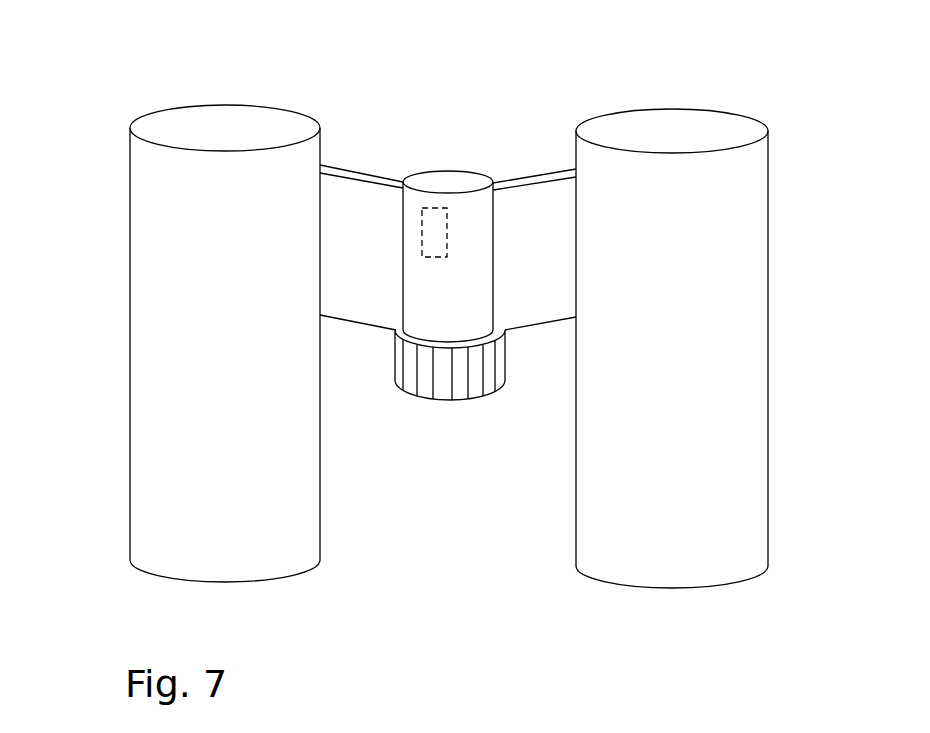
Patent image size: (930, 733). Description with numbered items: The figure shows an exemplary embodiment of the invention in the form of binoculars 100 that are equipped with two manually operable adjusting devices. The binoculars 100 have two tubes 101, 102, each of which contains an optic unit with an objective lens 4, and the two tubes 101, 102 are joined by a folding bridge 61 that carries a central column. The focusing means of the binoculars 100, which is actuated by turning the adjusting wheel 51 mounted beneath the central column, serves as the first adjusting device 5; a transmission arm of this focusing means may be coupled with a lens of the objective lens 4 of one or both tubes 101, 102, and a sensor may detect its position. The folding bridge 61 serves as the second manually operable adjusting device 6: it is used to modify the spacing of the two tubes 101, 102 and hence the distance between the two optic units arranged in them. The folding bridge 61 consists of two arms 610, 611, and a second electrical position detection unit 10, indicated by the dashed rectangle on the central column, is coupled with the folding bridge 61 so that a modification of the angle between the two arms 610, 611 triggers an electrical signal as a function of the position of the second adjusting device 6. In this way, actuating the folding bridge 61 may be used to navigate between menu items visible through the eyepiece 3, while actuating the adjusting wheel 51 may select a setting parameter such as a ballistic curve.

The eyepiece 3 is at (486, 231).
The objective lens 4 is at (130, 572).
The first adjusting device 5 is at (450, 419).
The adjusting wheel 51 is at (448, 403).
The second manually operable adjusting device 6 is at (291, 200).
The folding bridge 61 is at (457, 172).
The second electrical position detection unit 10 is at (425, 245).
The binoculars 100 is at (392, 560).
The tube 101 is at (128, 455).
The tube 102 is at (575, 498).
The arm of folding bridge 610 is at (358, 318).
The arm of folding bridge 611 is at (553, 318).